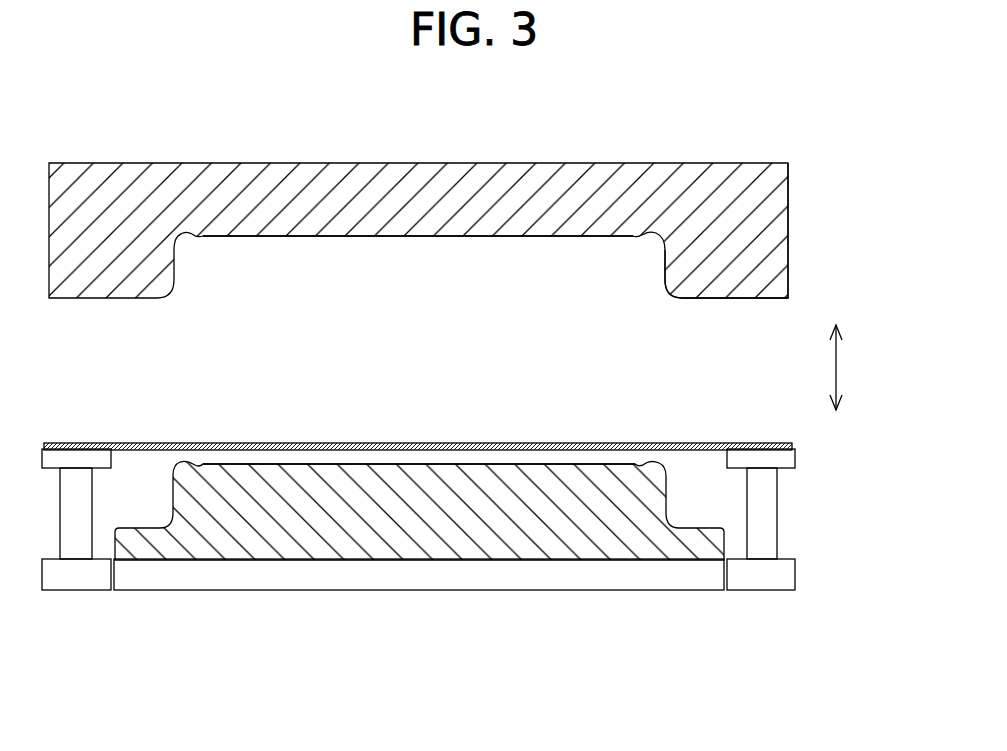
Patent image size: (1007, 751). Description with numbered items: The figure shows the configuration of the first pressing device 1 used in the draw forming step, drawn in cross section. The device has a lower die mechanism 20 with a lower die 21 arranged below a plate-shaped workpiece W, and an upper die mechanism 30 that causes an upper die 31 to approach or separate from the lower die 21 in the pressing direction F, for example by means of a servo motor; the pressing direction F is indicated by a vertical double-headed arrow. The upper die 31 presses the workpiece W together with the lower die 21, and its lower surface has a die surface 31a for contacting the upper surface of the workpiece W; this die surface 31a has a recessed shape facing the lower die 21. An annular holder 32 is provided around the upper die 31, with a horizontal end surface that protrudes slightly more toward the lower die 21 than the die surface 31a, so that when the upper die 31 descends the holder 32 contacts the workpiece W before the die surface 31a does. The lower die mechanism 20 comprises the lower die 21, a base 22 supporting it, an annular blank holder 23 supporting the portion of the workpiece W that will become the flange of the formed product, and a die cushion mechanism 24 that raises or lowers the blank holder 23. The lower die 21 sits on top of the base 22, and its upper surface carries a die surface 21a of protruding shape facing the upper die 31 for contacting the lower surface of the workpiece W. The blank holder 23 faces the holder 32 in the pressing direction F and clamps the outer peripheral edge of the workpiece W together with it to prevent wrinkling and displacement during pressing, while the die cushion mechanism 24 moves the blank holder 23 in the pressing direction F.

The first pressing device 1 is at (150, 79).
The upper die mechanism 30 is at (850, 206).
The upper die 31 is at (497, 187).
The die surface 31a is at (590, 238).
The holder 32 is at (776, 272).
The pressing direction F is at (837, 362).
The workpiece W is at (393, 447).
The lower die mechanism 20 is at (855, 489).
The lower die 21 is at (512, 523).
The die surface 21a is at (322, 465).
The base 22 is at (602, 580).
The blank holder 23 is at (776, 530).
The die cushion mechanism 24 is at (788, 578).